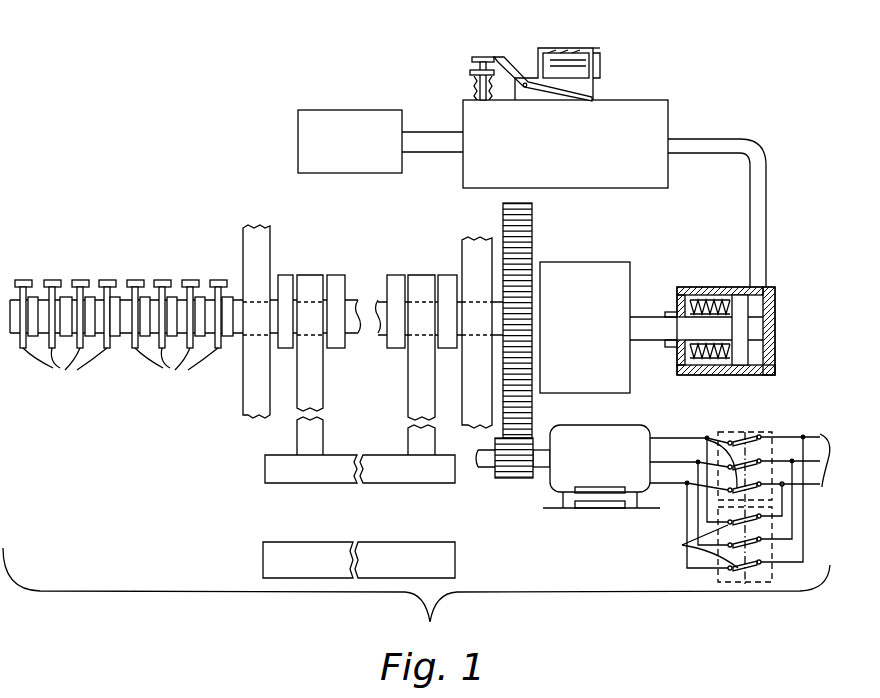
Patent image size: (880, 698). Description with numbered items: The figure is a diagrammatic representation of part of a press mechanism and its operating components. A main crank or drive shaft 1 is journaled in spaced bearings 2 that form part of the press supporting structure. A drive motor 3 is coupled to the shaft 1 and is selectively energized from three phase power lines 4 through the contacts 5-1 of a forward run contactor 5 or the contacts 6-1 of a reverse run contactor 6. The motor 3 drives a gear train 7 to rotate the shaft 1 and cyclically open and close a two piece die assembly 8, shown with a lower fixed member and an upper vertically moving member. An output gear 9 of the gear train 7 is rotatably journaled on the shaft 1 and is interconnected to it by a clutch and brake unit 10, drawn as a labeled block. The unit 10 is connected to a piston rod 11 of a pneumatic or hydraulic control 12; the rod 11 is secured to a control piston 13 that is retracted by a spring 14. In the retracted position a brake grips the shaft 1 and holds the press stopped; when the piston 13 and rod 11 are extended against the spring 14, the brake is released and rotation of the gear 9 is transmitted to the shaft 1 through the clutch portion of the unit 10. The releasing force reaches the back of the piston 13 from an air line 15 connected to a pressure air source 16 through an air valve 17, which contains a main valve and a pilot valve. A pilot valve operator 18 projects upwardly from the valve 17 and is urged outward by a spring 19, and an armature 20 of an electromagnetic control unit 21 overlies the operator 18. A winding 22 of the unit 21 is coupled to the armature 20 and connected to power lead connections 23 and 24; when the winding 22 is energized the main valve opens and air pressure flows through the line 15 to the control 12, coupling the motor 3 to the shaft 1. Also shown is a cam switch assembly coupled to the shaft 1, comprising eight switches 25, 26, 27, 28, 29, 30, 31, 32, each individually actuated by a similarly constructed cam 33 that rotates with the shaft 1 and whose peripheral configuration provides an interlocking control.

The main crank or drive shaft 1 is at (371, 300).
The bearings 2 is at (250, 418).
The drive motor 3 is at (558, 478).
The three phase power lines 4 is at (795, 490).
The forward run contactor 5 is at (772, 432).
The contacts of forward run contactor 5-1 is at (720, 446).
The reverse run contactor 6 is at (718, 582).
The contacts of reverse run contactor 6-1 is at (682, 545).
The gear train 7 is at (491, 486).
The two piece die assembly 8 is at (322, 478).
The output gear 9 is at (528, 225).
The clutch and brake unit 10 is at (603, 250).
The piston rod 11 is at (651, 318).
The pneumatic or hydraulic control 12 is at (746, 343).
The control piston 13 is at (746, 316).
The spring 14 is at (712, 358).
The air line 15 is at (768, 212).
The pressure air source 16 is at (338, 110).
The air valve 17 is at (664, 118).
The pilot valve operator 18 is at (471, 80).
The spring 19 is at (472, 93).
The armature 20 is at (525, 68).
The electromagnetic control unit 21 is at (605, 58).
The winding 22 is at (578, 24).
The power lead connection 23 is at (542, 48).
The power lead connection 24 is at (597, 48).
The switch 25 is at (25, 279).
The switch 26 is at (54, 279).
The switch 27 is at (82, 279).
The switch 28 is at (109, 279).
The switch 29 is at (146, 266).
The switch 30 is at (173, 266).
The switch 31 is at (192, 279).
The switch 32 is at (220, 279).
The cam 33 is at (120, 364).